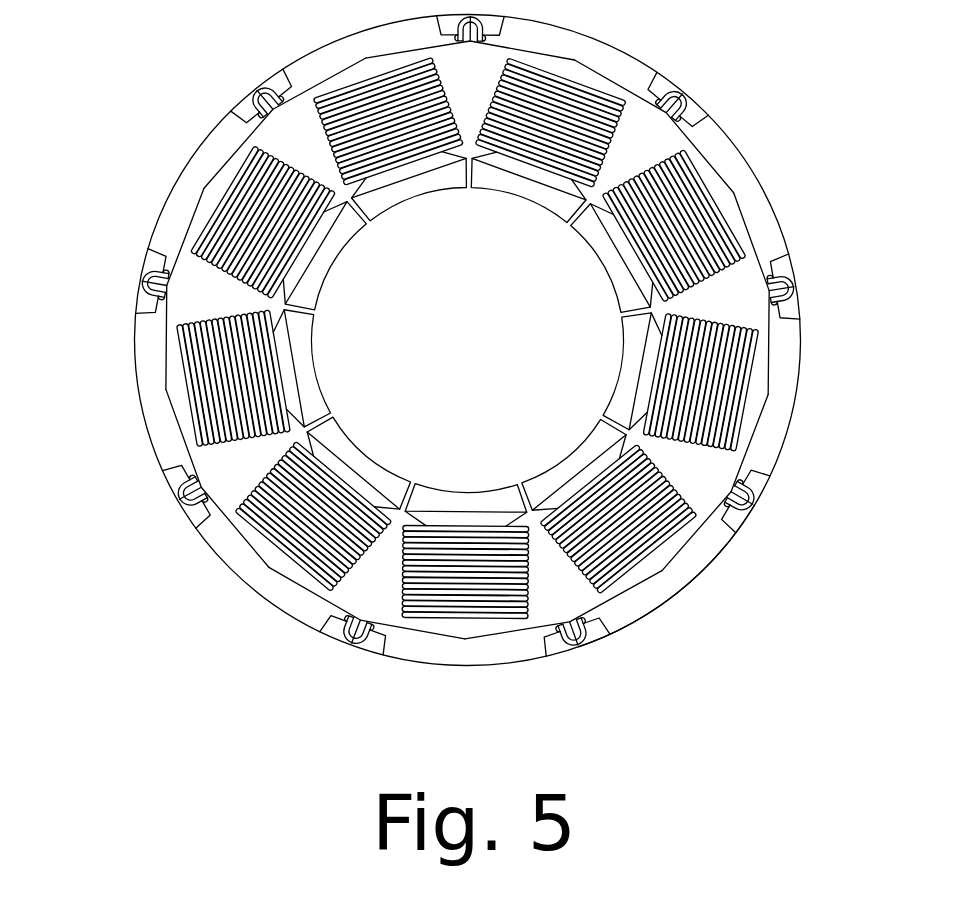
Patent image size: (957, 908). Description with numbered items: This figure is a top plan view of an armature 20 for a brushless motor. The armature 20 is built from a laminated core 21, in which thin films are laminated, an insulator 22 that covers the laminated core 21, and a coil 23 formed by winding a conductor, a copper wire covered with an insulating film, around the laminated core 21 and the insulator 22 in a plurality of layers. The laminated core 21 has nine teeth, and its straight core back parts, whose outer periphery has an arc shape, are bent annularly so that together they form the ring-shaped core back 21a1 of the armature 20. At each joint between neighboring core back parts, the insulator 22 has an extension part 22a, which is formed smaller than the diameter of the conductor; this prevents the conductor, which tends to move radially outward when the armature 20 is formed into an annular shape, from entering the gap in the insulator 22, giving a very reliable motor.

The armature 20 is at (173, 142).
The laminated core 21 is at (315, 367).
The core back 21a1 is at (684, 580).
The insulator 22 is at (160, 385).
The extension part 22a is at (358, 613).
The coil 23 is at (257, 228).